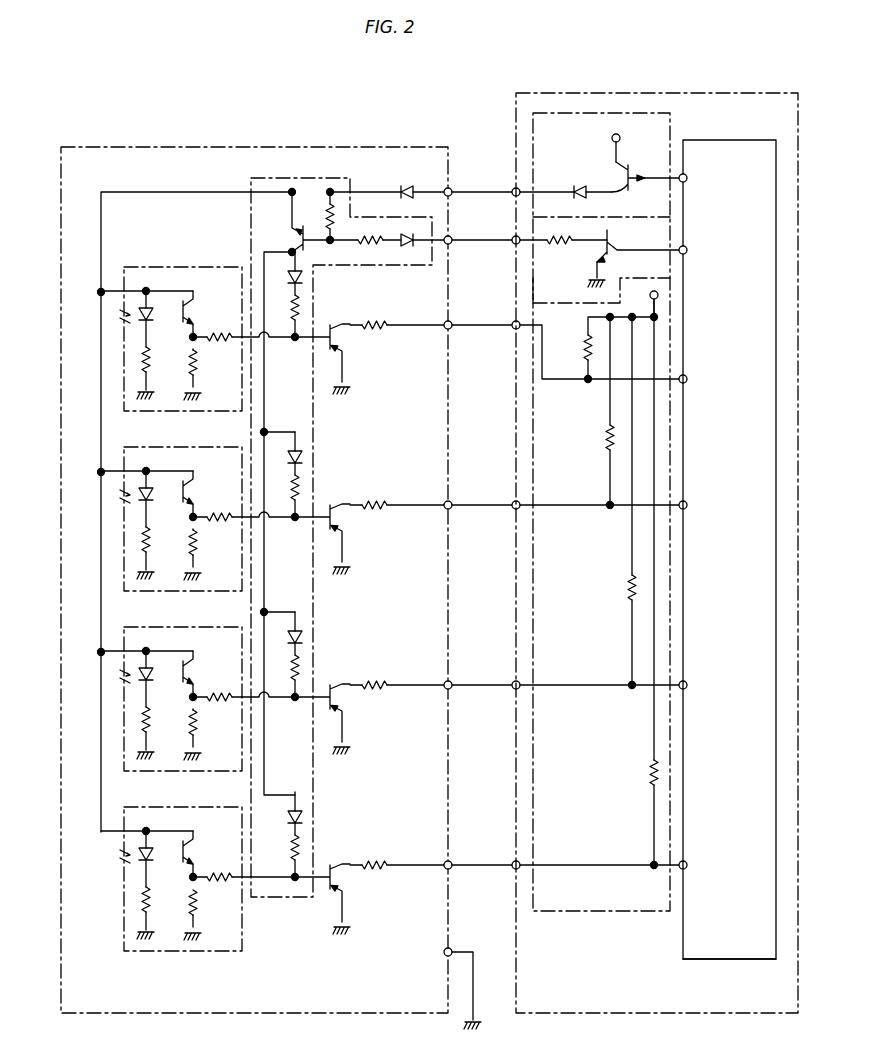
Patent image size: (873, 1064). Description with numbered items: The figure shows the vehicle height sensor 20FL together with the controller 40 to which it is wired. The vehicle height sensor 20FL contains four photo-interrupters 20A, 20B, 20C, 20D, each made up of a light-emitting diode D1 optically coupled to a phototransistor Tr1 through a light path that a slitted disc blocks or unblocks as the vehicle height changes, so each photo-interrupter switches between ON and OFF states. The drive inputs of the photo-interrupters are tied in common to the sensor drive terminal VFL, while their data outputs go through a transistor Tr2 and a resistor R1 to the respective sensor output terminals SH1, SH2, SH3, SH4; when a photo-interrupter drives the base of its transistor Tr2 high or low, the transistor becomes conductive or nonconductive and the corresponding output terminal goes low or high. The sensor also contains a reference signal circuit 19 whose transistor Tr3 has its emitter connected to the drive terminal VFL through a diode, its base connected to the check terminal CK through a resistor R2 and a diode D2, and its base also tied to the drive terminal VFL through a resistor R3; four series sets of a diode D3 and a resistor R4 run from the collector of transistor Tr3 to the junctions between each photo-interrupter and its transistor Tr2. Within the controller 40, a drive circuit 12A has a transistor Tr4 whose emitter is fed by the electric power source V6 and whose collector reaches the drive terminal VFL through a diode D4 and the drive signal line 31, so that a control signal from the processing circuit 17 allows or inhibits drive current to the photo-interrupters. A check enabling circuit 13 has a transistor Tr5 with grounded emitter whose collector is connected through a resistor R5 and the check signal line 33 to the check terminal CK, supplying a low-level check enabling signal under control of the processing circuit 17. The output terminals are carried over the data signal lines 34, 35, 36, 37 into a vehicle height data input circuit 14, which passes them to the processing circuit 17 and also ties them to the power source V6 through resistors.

The vehicle height sensor 20FL is at (212, 132).
The reference signal circuit 19 is at (330, 178).
The photo-interrupter 20A is at (150, 267).
The photo-interrupter 20B is at (150, 447).
The photo-interrupter 20C is at (150, 627).
The photo-interrupter 20D is at (150, 807).
The light-emitting diode D1 is at (140, 312).
The phototransistor Tr1 is at (190, 316).
The transistor Tr2 is at (344, 339).
The transistor Tr3 is at (298, 238).
The transistor Tr4 is at (620, 175).
The transistor Tr5 is at (608, 248).
The resistor R1 is at (368, 323).
The resistor R2 is at (370, 238).
The resistor R3 is at (337, 212).
The resistor R4 is at (300, 310).
The resistor R5 is at (559, 246).
The diode D2 is at (410, 235).
The diode D3 is at (299, 277).
The diode D4 is at (578, 188).
The sensor drive terminal VFL is at (448, 189).
The check terminal CK is at (449, 237).
The sensor output terminal SH1 is at (449, 323).
The sensor output terminal SH2 is at (449, 503).
The sensor output terminal SH3 is at (449, 683).
The sensor output terminal SH4 is at (449, 863).
The drive signal line 31 is at (486, 194).
The check signal line 33 is at (483, 243).
The data signal line 34 is at (481, 329).
The data signal line 35 is at (481, 509).
The data signal line 36 is at (481, 689).
The data signal line 37 is at (481, 869).
The check enabling circuit 13 is at (532, 284).
The drive circuit 12A is at (548, 112).
The vehicle height data input circuit 14 is at (622, 912).
The controller 40 is at (736, 92).
The processing circuit 17 is at (713, 959).
The electric power source V6 is at (635, 217).